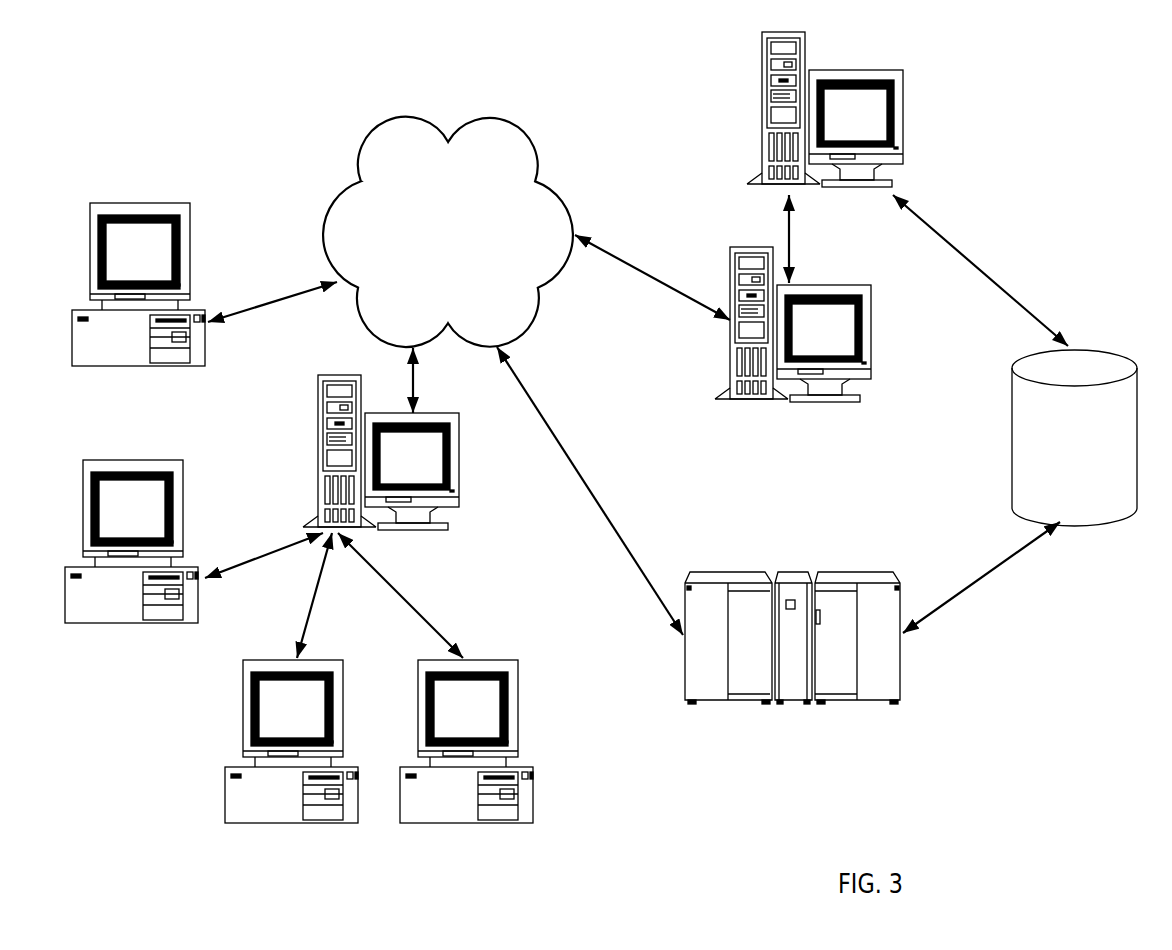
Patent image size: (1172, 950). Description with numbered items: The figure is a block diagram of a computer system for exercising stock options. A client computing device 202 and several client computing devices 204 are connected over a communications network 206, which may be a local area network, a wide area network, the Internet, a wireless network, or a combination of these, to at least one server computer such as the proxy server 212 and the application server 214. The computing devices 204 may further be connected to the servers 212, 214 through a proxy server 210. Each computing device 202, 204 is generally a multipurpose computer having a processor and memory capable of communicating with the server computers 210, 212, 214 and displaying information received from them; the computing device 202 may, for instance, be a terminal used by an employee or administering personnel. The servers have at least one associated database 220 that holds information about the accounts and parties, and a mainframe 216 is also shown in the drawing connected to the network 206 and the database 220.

The computing device 202 is at (155, 203).
The client computing device 204 is at (160, 460).
The communications network 206 is at (523, 323).
The proxy server 210 is at (400, 413).
The proxy server 212 is at (860, 290).
The application server 214 is at (878, 72).
The mainframe 216 is at (874, 548).
The database 220 is at (1103, 350).